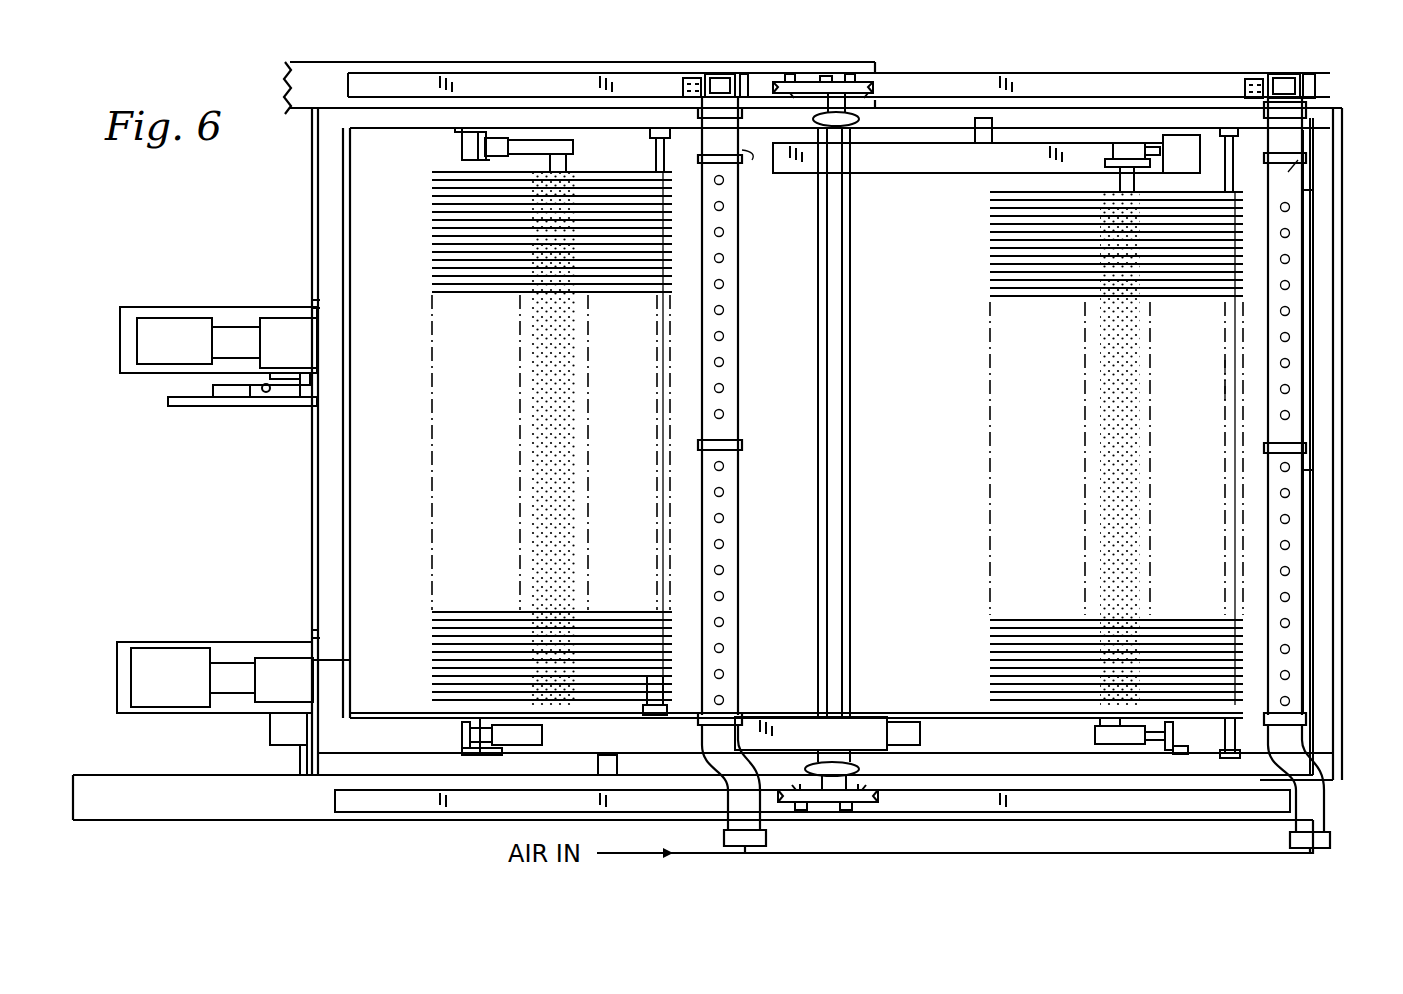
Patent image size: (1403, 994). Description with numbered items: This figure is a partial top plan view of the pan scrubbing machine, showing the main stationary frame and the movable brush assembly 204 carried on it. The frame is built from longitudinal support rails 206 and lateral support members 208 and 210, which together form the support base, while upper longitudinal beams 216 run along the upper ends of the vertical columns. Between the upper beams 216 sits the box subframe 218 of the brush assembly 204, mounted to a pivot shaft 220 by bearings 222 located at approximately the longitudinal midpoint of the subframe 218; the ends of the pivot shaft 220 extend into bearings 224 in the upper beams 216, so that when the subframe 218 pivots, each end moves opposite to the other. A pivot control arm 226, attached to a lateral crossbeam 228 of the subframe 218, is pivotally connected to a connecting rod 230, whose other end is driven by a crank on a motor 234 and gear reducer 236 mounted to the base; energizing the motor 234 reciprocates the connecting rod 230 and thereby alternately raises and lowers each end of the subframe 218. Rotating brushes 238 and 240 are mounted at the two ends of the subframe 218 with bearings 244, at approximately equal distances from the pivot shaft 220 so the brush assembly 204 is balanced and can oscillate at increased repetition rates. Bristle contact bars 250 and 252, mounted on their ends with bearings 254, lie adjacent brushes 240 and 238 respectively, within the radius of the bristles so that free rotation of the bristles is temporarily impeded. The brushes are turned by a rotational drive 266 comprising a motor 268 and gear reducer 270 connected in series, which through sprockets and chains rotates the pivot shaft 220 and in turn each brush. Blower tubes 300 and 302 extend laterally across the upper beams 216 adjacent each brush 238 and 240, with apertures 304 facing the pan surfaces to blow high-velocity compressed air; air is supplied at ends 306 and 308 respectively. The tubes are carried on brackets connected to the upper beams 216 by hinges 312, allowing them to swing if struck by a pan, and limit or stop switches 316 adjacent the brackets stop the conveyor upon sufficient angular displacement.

The movable brush assembly 204 is at (1345, 438).
The longitudinal support rails 206 is at (330, 62).
The lateral support member 208 is at (315, 220).
The lateral support member 210 is at (818, 342).
The upper longitudinal beams 216 is at (413, 66).
The box subframe 218 is at (1328, 148).
The pivot shaft 220 is at (818, 229).
The bearings 222 is at (870, 123).
The bearings 224 is at (838, 82).
The pivot control arm 226 is at (195, 408).
The lateral crossbeam 228 is at (312, 528).
The connecting rod 230 is at (208, 396).
The motor 234 is at (155, 315).
The gear reducer 236 is at (270, 318).
The rotating brush 238 is at (425, 220).
The rotating brush 240 is at (1252, 380).
The bearings 244 is at (548, 130).
The bristle contact bar 250 is at (1298, 184).
The bristle contact bar 252 is at (658, 150).
The bearings 254 is at (660, 133).
The rotational drive 266 is at (110, 636).
The motor 268 is at (153, 657).
The gear reducer 270 is at (265, 658).
The blower tube 300 is at (742, 145).
The blower tube 302 is at (1285, 160).
The apertures 304 is at (722, 570).
The end 306 is at (722, 840).
The end 308 is at (1332, 840).
The hinges 312 is at (742, 74).
The limit or stop switches 316 is at (698, 74).